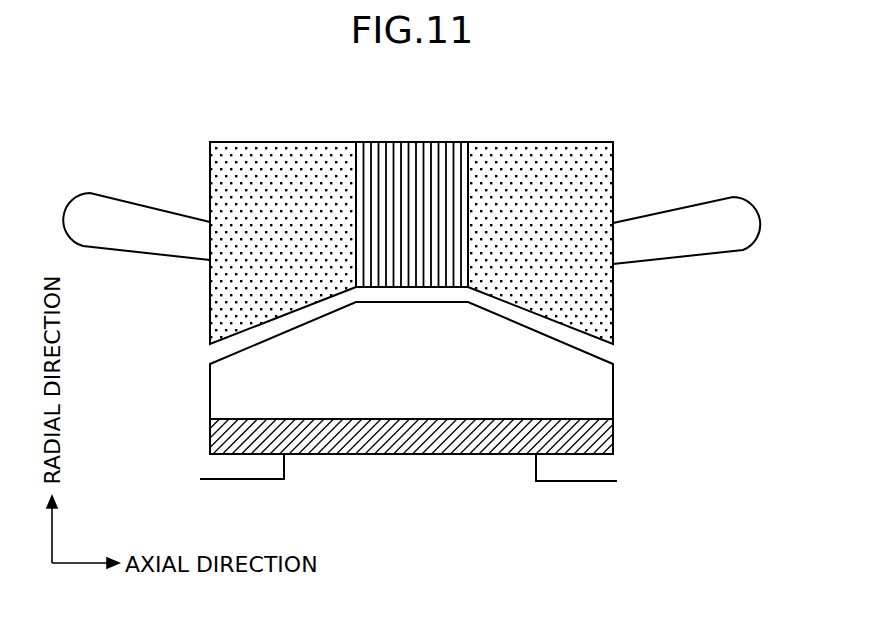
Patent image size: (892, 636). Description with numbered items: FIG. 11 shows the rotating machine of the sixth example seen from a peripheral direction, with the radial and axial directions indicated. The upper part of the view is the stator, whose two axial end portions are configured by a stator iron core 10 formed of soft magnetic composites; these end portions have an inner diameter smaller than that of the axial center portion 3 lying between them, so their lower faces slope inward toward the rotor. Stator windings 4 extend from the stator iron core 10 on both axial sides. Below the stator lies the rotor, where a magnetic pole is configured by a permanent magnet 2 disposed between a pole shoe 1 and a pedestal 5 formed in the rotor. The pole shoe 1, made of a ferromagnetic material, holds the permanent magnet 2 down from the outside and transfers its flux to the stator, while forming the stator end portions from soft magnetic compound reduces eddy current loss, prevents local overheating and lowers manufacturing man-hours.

The pole shoe 1 is at (600, 393).
The permanent magnet 2 is at (605, 435).
The permanent magnet / winding core 3 is at (415, 148).
The coil end 4 is at (672, 224).
The pedestal 5 is at (410, 464).
The stator iron core 10 is at (288, 143).